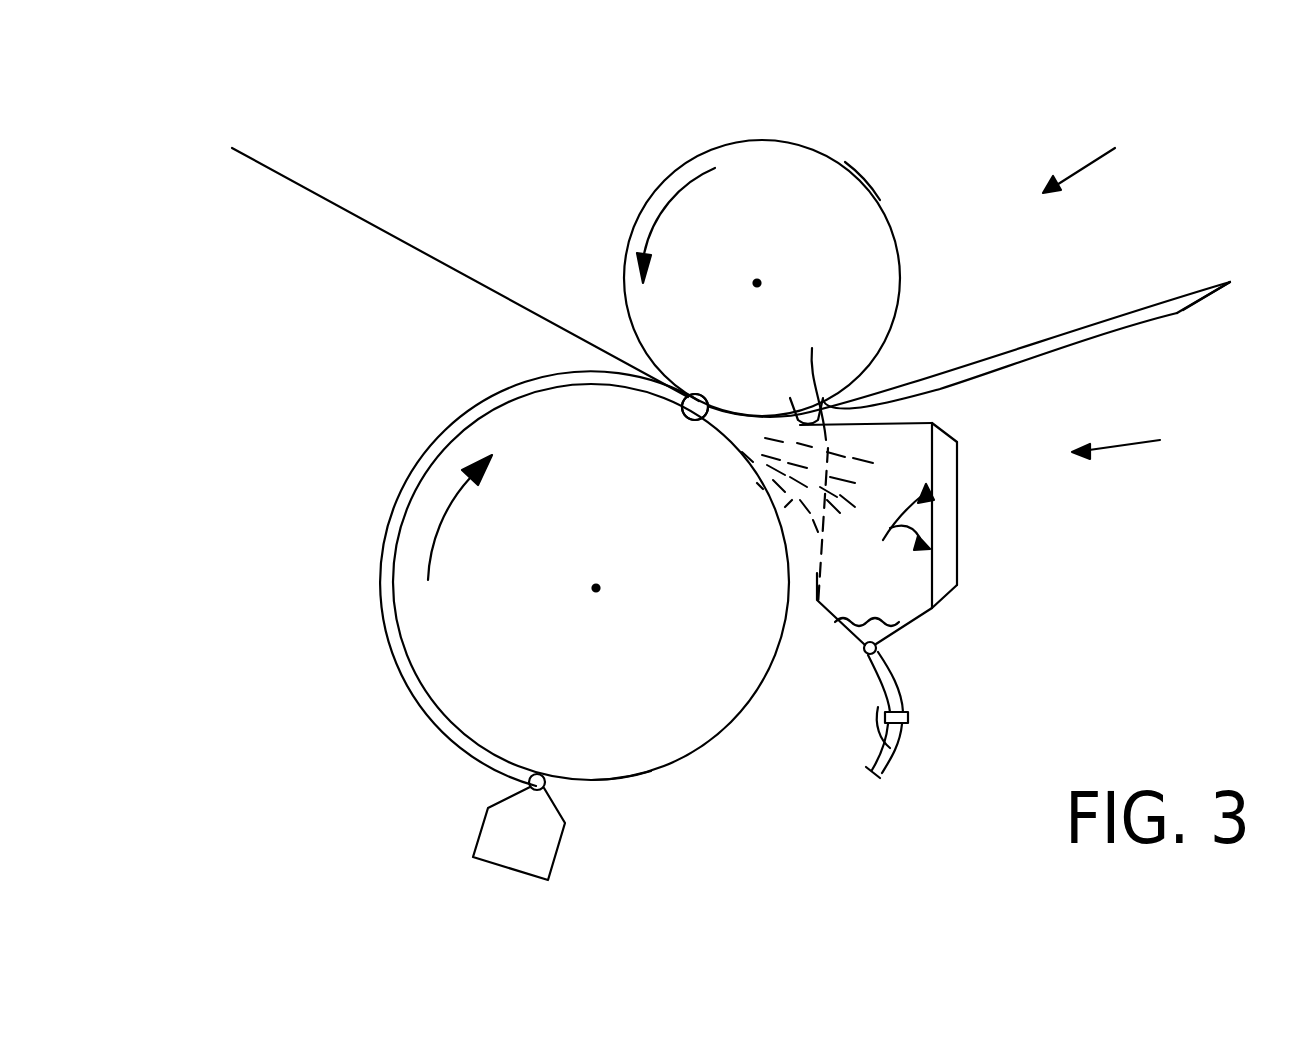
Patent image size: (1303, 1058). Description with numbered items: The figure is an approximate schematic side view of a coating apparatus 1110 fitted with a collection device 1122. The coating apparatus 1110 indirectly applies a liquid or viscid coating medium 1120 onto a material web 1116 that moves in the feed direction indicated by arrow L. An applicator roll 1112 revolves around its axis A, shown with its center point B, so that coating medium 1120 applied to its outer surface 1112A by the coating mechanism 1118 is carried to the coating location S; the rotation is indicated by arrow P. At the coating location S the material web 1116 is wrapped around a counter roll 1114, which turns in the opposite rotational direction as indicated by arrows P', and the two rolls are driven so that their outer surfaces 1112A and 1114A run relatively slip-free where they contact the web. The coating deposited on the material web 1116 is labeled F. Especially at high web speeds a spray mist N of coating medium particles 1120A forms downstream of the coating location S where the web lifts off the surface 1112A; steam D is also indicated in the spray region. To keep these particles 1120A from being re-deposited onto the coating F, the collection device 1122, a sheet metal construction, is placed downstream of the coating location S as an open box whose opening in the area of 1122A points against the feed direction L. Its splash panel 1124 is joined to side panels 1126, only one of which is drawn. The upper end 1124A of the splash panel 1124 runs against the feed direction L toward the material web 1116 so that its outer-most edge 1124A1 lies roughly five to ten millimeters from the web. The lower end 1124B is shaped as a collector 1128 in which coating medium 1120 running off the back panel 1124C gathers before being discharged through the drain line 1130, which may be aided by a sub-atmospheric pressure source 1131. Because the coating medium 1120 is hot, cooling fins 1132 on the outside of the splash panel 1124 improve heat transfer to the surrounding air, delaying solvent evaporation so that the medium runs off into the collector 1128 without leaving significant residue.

The coating apparatus 1110 is at (1117, 156).
The applicator roll 1112 is at (653, 727).
The outer surface of applicator roll 1112A is at (612, 792).
The counter roll 1114 is at (748, 170).
The outer surface of counter roll 1114A is at (845, 162).
The material web 1116 is at (308, 190).
The coating mechanism 1118 is at (500, 837).
The coating medium 1120 is at (380, 578).
The coating medium particles 1120A is at (757, 483).
The collection device 1122 is at (991, 476).
The opening area of collection device 1122A is at (818, 568).
The splash panel 1124 is at (932, 507).
The upper end of splash panel 1124A is at (900, 425).
The outer-most edge of upper end 1124A1 is at (826, 374).
The lower end of splash panel 1124B is at (903, 640).
The back panel 1124C is at (934, 547).
The side panel 1126 is at (903, 583).
The collector 1128 is at (850, 620).
The drain line 1130 is at (905, 738).
The sub-atmospheric pressure source 1131 is at (908, 732).
The cooling fins 1132 is at (948, 458).
The axis of applicator roll A is at (596, 590).
The roller axis B is at (757, 283).
The steam D is at (790, 398).
The coating F is at (1072, 330).
The direction of movement of material web L is at (1200, 297).
The spray mist N is at (785, 507).
The drum rotation direction P is at (476, 517).
The rotational direction arrows P' is at (696, 225).
The coating location S is at (674, 416).